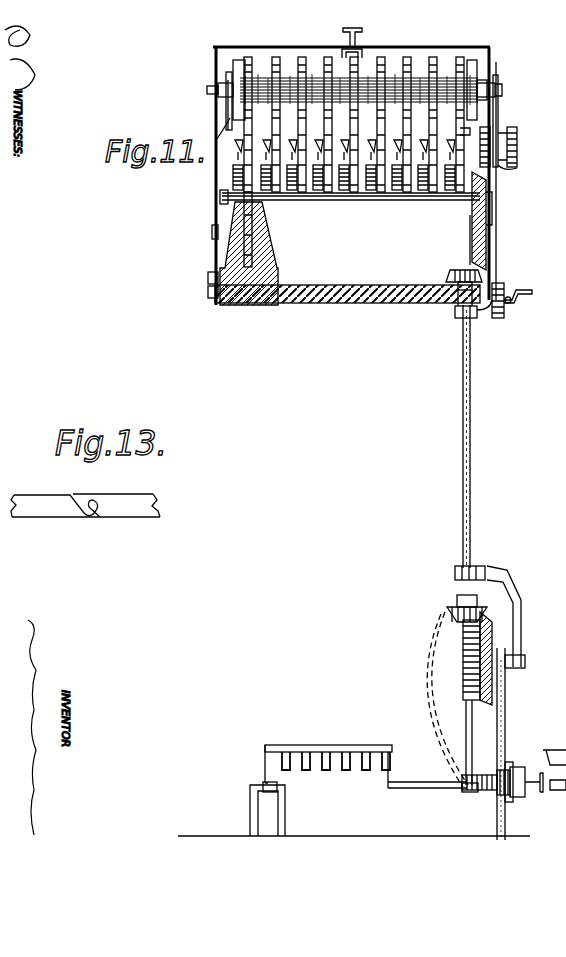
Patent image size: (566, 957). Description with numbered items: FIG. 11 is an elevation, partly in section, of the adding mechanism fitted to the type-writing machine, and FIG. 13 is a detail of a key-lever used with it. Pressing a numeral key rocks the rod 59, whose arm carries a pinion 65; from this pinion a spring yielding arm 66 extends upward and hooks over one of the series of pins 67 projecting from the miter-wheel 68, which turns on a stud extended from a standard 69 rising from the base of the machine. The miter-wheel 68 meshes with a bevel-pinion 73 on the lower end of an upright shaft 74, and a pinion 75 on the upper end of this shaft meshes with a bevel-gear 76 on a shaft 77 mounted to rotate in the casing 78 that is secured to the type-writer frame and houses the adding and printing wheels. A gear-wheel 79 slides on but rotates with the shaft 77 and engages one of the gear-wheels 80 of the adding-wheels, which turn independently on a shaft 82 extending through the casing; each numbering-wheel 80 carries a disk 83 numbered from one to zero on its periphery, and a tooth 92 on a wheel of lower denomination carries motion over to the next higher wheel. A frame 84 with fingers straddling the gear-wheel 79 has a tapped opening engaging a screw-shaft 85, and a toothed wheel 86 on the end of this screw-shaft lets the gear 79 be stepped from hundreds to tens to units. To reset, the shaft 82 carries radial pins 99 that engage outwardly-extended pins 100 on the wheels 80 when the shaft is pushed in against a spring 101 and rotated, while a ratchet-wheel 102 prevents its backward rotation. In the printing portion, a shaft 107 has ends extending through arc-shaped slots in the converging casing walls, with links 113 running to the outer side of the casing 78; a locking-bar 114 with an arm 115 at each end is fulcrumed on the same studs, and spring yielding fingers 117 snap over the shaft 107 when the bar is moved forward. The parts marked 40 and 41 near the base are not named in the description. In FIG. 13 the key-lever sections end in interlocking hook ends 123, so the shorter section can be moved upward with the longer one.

In FIG. 11, the spring yielding fingers 117 is at (233, 84).
In FIG. 11, the tooth 92 is at (228, 112).
In FIG. 11, the links 113 is at (226, 122).
In FIG. 11, the shaft 82 is at (230, 140).
In FIG. 11, the frame 84 is at (230, 262).
In FIG. 11, the disk 83 is at (290, 188).
In FIG. 11, the numbering-wheels 80 is at (462, 190).
In FIG. 11, the shaft 77 is at (376, 204).
In FIG. 11, the gear-wheel 79 is at (277, 258).
In FIG. 11, the screw-shaft 85 is at (345, 304).
In FIG. 11, the casing 78 is at (487, 205).
In FIG. 11, the bevel-gear 76 is at (472, 248).
In FIG. 11, the pinion 75 is at (450, 272).
In FIG. 11, the toothed wheel 86 is at (504, 314).
In FIG. 11, the shaft 74 is at (471, 490).
In FIG. 11, the locking-bar 114 is at (480, 80).
In FIG. 11, the shaft 107 is at (500, 86).
In FIG. 11, the outwardly-extended pins 100 is at (460, 128).
In FIG. 11, the arm 115 is at (475, 132).
In FIG. 11, the radial pins 99 is at (490, 140).
In FIG. 11, the spring 101 is at (517, 150).
In FIG. 11, the ratchet-wheel 102 is at (505, 170).
In FIG. 11, the bevel-pinion 73 is at (455, 605).
In FIG. 11, the pins 67 is at (465, 632).
In FIG. 11, the miter-wheel 68 is at (508, 692).
In FIG. 11, the standard 69 is at (506, 730).
In FIG. 11, the spring yielding arm 66 is at (466, 716).
In FIG. 11, the rod 59 is at (388, 745).
In FIG. 11, the pinion 65 is at (475, 790).
In FIG. 11, the gear 40 is at (490, 795).
In FIG. 11, the knob 41 is at (522, 795).
In FIG. 13, the hook ends 123 is at (90, 520).